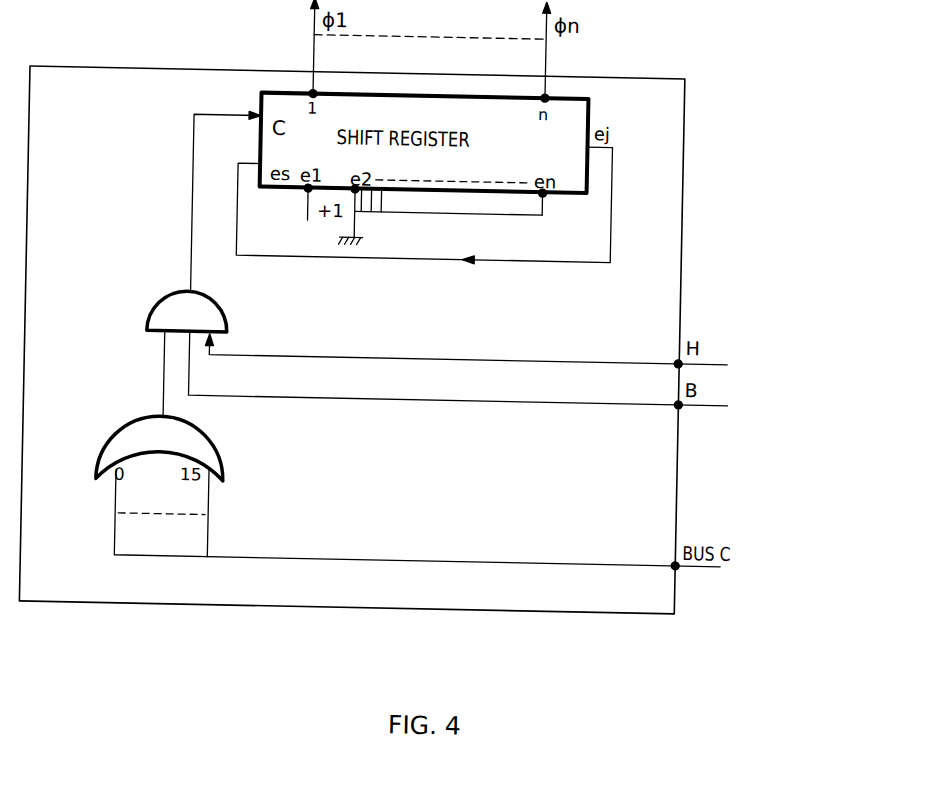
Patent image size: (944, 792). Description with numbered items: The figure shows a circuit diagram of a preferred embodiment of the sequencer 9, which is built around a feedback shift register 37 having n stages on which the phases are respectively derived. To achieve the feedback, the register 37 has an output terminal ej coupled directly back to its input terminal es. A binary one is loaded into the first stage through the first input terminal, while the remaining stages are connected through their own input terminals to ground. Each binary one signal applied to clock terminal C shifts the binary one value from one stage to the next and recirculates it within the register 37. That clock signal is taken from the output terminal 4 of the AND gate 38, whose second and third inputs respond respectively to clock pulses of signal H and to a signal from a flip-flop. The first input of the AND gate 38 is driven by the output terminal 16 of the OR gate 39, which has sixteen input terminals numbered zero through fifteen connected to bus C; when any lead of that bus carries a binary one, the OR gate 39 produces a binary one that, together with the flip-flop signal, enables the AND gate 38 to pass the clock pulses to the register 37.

The sequencer 9 is at (166, 597).
The register 37 is at (442, 221).
The AND gate 38 is at (226, 297).
The OR gate 39 is at (218, 431).
The output terminal of AND gate 4 is at (226, 201).
The output terminal of OR gate 16 is at (178, 375).